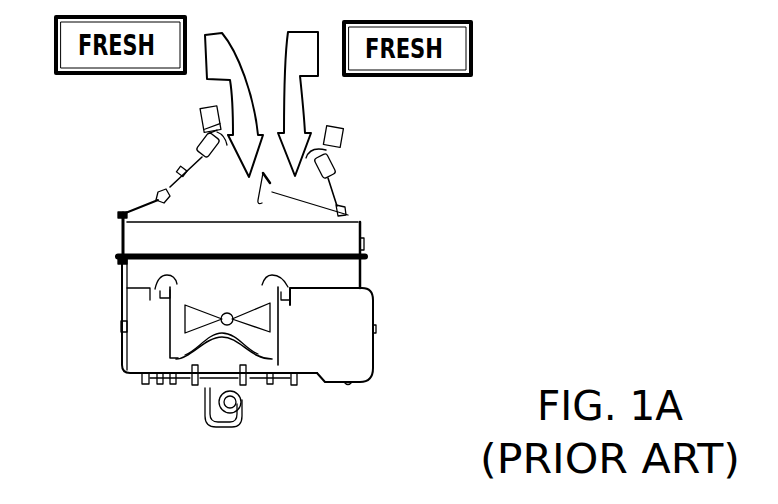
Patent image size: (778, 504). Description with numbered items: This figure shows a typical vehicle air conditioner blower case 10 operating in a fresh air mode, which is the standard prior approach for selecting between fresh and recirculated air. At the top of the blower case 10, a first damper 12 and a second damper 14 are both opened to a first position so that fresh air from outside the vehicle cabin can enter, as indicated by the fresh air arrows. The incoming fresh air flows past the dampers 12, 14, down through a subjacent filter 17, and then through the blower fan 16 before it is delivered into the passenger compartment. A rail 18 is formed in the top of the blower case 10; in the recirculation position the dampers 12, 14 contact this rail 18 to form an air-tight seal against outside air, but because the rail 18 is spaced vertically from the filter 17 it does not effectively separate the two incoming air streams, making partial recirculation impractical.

The blower case 10 is at (383, 338).
The first damper 12 is at (167, 187).
The second damper 14 is at (343, 195).
The blower fan 16 is at (185, 311).
The filter 17 is at (147, 233).
The rail 18 is at (348, 215).